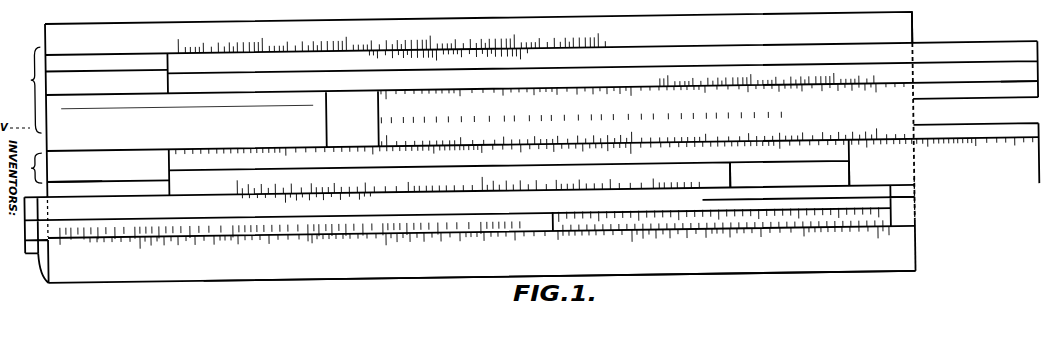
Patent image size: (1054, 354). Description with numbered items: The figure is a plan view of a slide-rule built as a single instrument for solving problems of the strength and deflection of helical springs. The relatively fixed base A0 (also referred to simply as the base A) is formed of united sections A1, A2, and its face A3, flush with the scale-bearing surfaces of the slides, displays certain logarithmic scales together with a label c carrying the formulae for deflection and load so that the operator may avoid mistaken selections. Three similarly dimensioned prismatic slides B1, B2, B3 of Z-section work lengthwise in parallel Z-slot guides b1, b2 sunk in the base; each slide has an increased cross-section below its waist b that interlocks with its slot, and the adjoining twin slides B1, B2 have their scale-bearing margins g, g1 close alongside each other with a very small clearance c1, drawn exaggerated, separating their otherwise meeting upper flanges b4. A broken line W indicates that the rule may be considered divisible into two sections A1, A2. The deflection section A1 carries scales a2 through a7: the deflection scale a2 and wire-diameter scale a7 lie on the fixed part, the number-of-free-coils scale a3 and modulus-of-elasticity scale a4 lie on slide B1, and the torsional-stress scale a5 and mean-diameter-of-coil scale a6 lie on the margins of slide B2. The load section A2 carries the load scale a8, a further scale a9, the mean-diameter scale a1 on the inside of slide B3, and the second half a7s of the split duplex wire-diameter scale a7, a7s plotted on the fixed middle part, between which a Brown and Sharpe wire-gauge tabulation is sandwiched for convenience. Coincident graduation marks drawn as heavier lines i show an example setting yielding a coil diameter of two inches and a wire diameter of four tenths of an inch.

The base A is at (742, 20).
The first section of the rule A1 is at (24, 86).
The second section of the rule A2 is at (30, 178).
The relatively fixed base A0 is at (914, 124).
The face of the base A3 is at (805, 273).
The first slide B1 is at (733, 208).
The second slide B2 is at (604, 159).
The third slide B3 is at (602, 75).
The mean diameter scale of load section a1 is at (817, 91).
The deflection scale a2 is at (603, 243).
The number of free coils scale a3 is at (532, 236).
The modulus of elasticity scale a4 is at (358, 215).
The torsional stress scale a5 is at (716, 173).
The mean diameter of coil scale a6 is at (983, 151).
The diameter of wire scale a7 is at (875, 138).
The diameter of wire scale a7s is at (877, 100).
The load scale a8 is at (585, 50).
The load-formula scale a9 is at (517, 57).
The waist of slide b is at (1022, 96).
The Z-slot guide b1 is at (907, 229).
The Z-slot guide b2 is at (74, 177).
The upper flange b4 is at (107, 77).
The label c is at (883, 54).
The clearance c1 is at (917, 198).
The scale-bearing margin g is at (839, 173).
The scale-bearing margin g1 is at (837, 196).
The heavier graduation lines i is at (517, 57).
The dividing line W is at (950, 125).